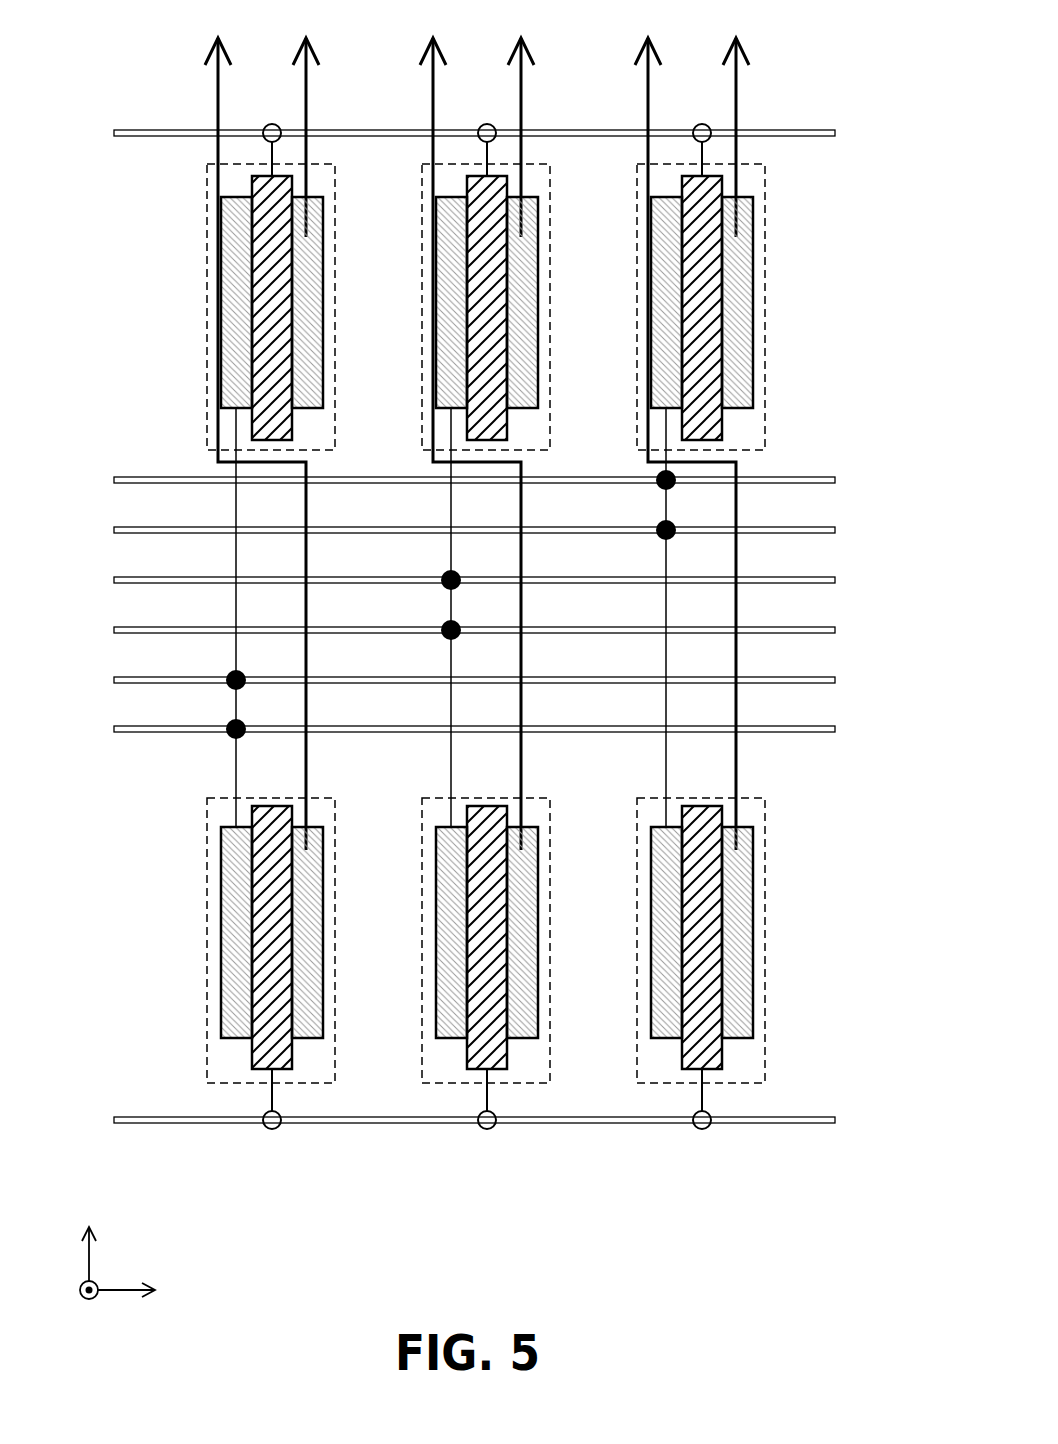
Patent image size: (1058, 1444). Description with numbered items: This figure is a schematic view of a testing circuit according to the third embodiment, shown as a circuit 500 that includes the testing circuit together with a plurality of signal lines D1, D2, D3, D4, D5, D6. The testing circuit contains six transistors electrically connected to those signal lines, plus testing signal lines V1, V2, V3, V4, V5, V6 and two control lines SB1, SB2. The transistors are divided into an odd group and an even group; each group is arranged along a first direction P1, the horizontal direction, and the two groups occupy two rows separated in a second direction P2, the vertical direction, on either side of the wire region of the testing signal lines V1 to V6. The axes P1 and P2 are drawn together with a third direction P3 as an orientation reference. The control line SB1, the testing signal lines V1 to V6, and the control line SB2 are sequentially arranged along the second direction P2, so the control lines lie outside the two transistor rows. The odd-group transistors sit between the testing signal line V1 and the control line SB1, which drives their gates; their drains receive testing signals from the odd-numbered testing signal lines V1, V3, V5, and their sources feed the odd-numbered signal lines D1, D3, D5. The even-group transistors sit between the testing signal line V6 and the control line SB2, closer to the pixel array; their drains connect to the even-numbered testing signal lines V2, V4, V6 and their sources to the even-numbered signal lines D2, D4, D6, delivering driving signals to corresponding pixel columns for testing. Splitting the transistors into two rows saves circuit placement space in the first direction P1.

The circuit 500 is at (900, 1213).
The signal line D1 is at (216, 90).
The signal line D2 is at (308, 90).
The signal line D3 is at (431, 90).
The signal line D4 is at (523, 90).
The signal line D5 is at (646, 90).
The signal line D6 is at (738, 90).
The testing signal line V1 is at (820, 726).
The testing signal line V2 is at (820, 677).
The testing signal line V3 is at (820, 627).
The testing signal line V4 is at (820, 577).
The testing signal line V5 is at (820, 527).
The testing signal line V6 is at (820, 477).
The control line SB1 is at (818, 1117).
The control line SB2 is at (812, 137).
The first direction P1 is at (144, 1293).
The second direction P2 is at (96, 1235).
The third direction P3 is at (67, 1293).